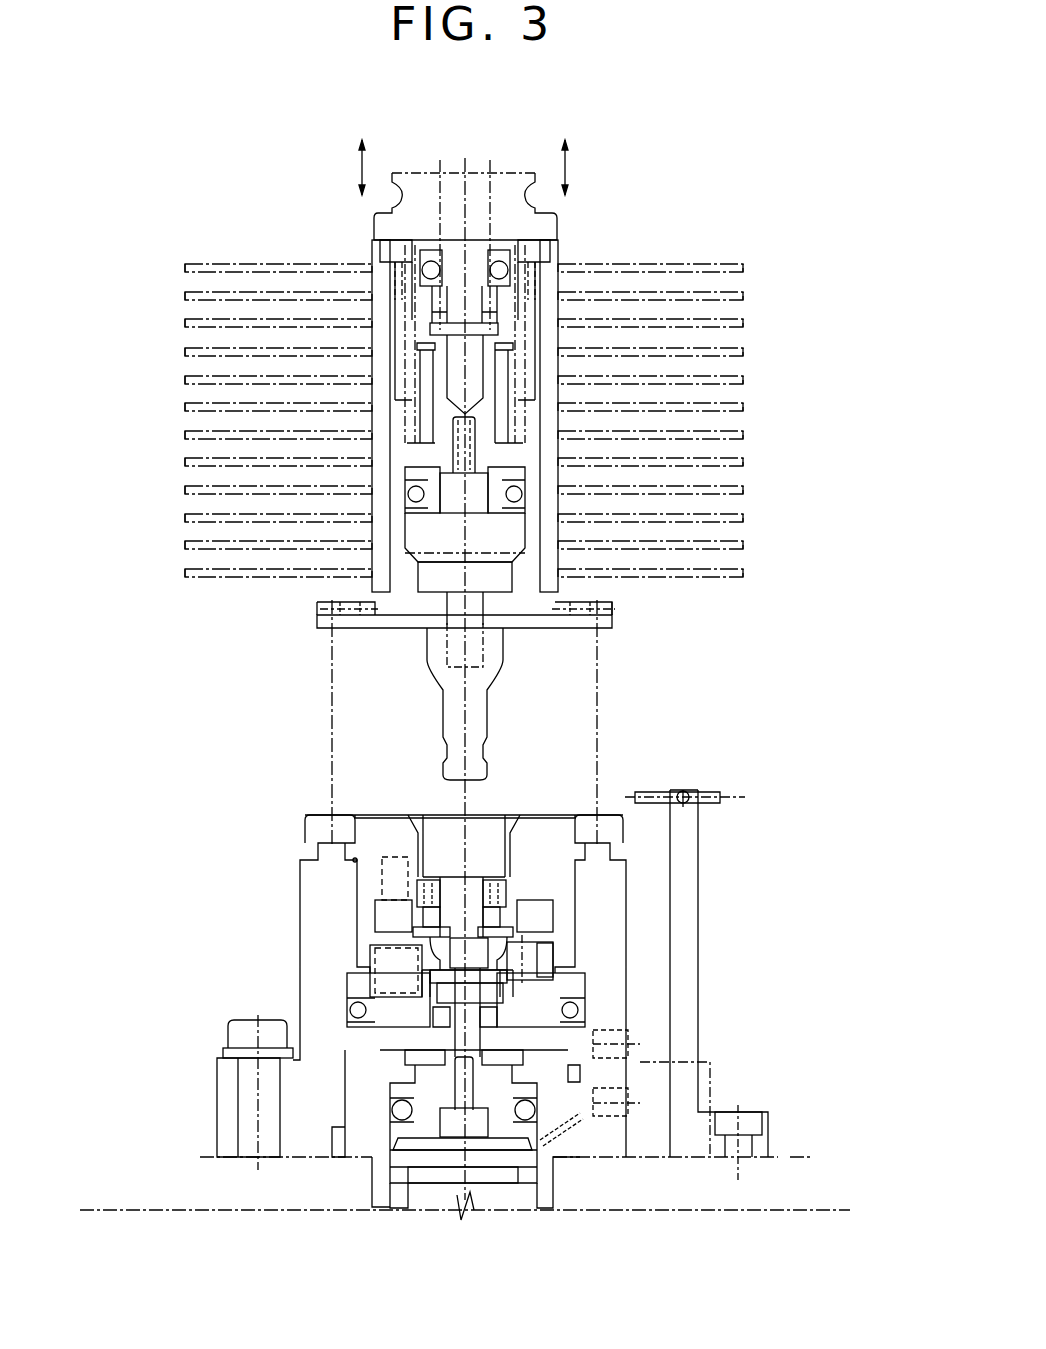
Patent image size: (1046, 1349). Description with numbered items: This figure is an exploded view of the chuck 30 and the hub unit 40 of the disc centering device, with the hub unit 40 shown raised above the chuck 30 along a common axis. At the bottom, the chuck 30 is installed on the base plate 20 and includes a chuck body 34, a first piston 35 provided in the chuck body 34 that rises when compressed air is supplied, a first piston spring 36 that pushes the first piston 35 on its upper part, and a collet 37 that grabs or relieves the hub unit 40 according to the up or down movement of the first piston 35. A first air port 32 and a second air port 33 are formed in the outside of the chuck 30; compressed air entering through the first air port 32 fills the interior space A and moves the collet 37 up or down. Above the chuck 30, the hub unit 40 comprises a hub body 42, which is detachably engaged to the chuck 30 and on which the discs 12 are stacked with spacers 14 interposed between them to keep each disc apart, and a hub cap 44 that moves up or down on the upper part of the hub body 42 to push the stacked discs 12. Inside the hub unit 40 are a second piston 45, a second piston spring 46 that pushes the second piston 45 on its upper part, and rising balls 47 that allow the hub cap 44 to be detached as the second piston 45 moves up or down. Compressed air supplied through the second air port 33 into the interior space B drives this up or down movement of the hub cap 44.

The discs 12 is at (697, 265).
The spacers 14 is at (548, 338).
The base plate 20 is at (655, 1200).
The chuck 30 is at (700, 962).
The first air port 32 is at (618, 1040).
The second air port 33 is at (618, 1100).
The chuck body 34 is at (305, 1145).
The first piston 35 is at (383, 1012).
The first piston spring 36 is at (385, 960).
The collet 37 is at (432, 940).
The hub unit 40 is at (272, 158).
The hub body 42 is at (548, 478).
The hub cap 44 is at (423, 182).
The second piston 45 is at (412, 497).
The second piston spring 46 is at (420, 410).
The rising balls 47 is at (432, 268).
The interior space A is at (357, 1042).
The interior space B is at (412, 540).